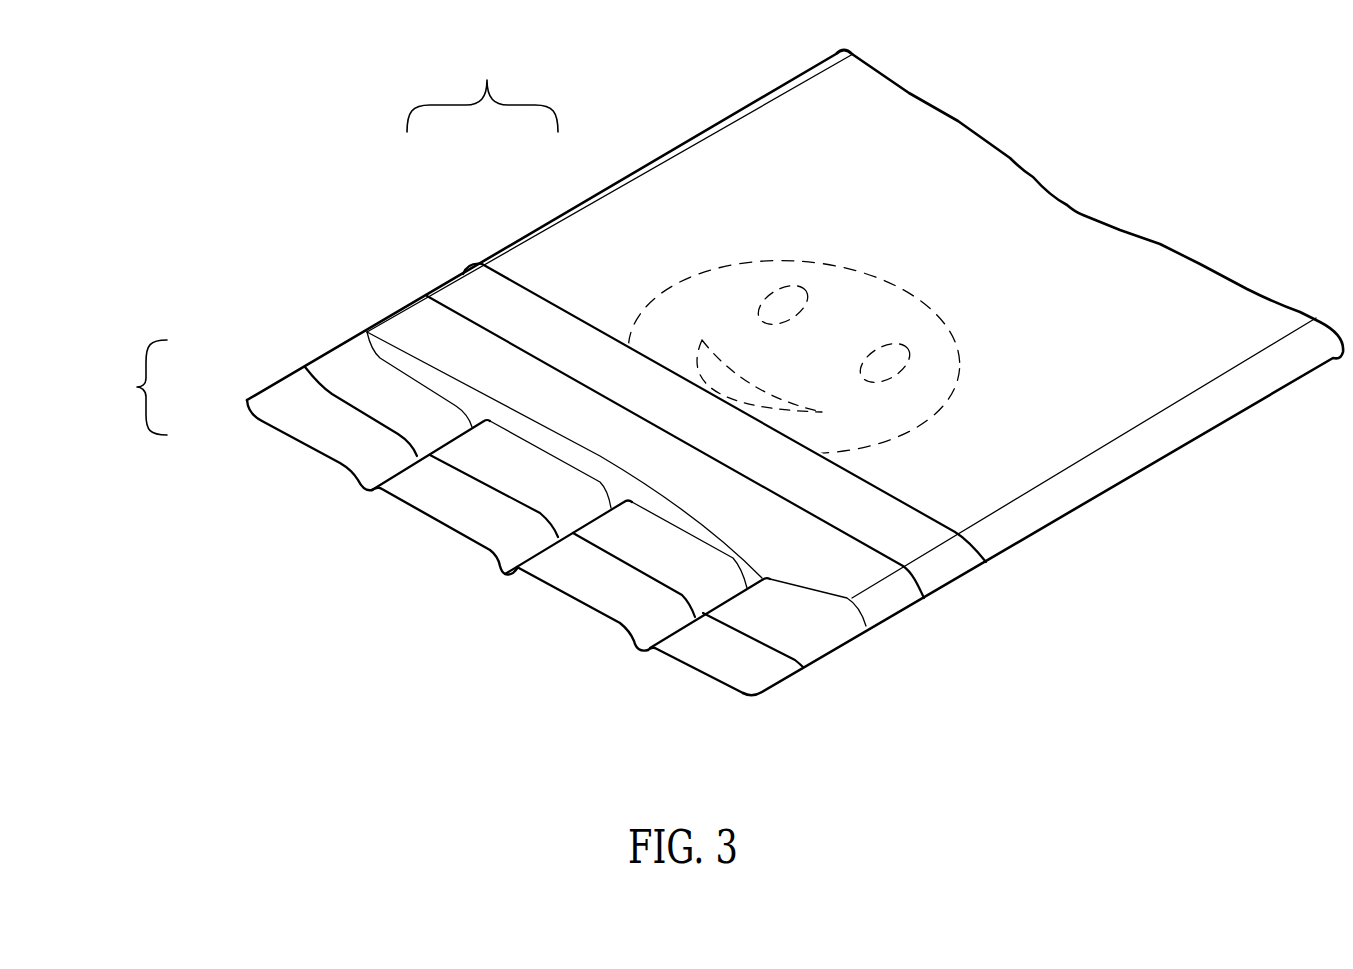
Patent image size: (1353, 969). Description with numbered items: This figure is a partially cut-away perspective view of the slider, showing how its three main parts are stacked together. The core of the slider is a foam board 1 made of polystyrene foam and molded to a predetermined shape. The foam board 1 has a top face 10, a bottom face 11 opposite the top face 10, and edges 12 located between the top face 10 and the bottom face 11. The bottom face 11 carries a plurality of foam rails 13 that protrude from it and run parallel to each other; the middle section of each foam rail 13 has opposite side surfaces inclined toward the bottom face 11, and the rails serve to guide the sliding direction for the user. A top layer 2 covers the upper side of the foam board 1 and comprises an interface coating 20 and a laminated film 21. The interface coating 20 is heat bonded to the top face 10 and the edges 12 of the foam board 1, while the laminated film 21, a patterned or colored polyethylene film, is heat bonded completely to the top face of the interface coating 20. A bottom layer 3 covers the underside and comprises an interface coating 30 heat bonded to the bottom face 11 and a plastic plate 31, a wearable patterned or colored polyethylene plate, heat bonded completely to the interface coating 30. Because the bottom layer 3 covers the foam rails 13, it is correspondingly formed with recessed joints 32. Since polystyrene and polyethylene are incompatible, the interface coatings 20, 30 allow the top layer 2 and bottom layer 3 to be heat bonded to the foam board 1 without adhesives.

The foam board 1 is at (365, 331).
The top layer 2 is at (482, 86).
The bottom layer 3 is at (427, 474).
The top face 10 is at (417, 343).
The bottom face 11 is at (830, 617).
The edges 12 is at (892, 588).
The foam rails 13 is at (752, 580).
The interface coating 20 is at (480, 307).
The laminated film 21 is at (580, 260).
The interface coating 30 is at (367, 388).
The plastic plate 31 is at (317, 432).
The recessed joints 32 is at (502, 570).